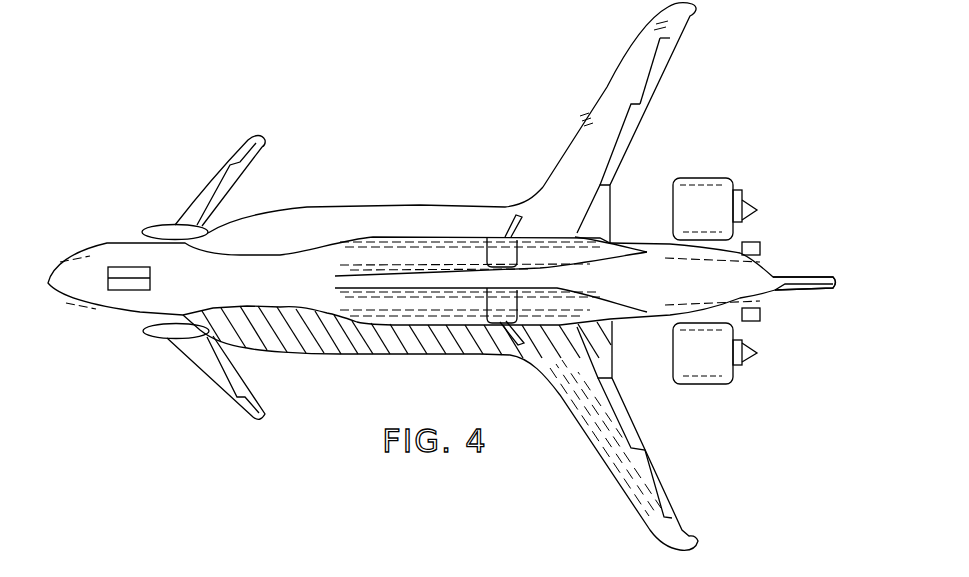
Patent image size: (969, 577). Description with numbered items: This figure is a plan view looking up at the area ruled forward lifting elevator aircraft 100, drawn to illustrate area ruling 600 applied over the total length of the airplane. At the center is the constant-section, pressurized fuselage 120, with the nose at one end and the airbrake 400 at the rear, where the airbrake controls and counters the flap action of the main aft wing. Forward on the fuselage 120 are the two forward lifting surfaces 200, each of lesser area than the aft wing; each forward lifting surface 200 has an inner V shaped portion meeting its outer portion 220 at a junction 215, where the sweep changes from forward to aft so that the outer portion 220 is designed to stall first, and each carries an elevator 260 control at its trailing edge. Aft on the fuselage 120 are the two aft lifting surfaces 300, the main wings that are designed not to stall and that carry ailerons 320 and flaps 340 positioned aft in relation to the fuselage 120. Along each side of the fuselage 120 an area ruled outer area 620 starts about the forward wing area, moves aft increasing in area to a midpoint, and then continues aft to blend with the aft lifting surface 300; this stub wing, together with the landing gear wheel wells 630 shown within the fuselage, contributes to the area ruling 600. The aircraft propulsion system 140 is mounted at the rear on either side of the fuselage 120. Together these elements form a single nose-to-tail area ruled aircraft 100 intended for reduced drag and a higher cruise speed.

The area ruled forward lifting elevator aircraft 100 is at (453, 280).
The fuselage 120 is at (95, 313).
The aircraft propulsion system 140 is at (733, 188).
The forward lifting surface 200 is at (199, 260).
The junction 215 is at (152, 222).
The outer portion of the forward lifting surface 220 is at (183, 203).
The elevator 260 is at (223, 177).
The aft lifting surface 300 is at (629, 280).
The ailerons 320 is at (655, 80).
The flaps 340 is at (633, 133).
The airbrake 400 is at (812, 308).
The area ruling 600 is at (336, 194).
The area ruled outer area 620 is at (333, 358).
The landing gear wheel wells 630 is at (493, 237).